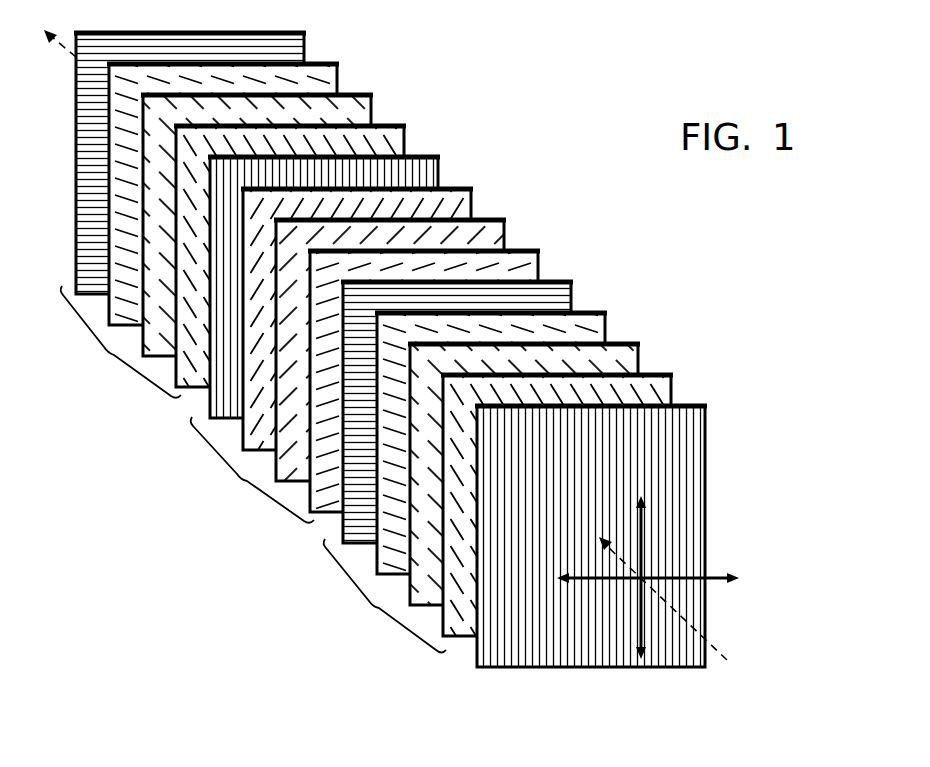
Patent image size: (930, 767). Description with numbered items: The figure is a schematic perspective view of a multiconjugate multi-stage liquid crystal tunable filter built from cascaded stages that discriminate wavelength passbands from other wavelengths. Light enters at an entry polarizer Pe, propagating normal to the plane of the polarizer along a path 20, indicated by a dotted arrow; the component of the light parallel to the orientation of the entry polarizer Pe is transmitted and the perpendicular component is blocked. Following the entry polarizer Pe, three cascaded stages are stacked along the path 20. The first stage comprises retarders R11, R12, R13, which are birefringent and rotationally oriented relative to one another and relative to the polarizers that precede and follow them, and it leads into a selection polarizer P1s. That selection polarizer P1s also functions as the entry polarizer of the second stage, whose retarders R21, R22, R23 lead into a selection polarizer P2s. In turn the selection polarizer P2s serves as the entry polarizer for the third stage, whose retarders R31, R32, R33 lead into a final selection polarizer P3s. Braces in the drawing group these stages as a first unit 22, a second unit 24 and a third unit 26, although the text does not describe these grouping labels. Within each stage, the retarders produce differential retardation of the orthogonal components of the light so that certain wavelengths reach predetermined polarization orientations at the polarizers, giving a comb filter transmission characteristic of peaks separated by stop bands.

The path of the light signal 20 is at (712, 640).
The first retardation unit 22 is at (385, 596).
The second retardation unit 24 is at (252, 470).
The third retardation unit 26 is at (119, 342).
The entry polarizer Pe is at (502, 657).
The retarder R11 is at (673, 378).
The retarder R12 is at (625, 350).
The retarder R13 is at (592, 320).
The selection polarizer P1s is at (553, 282).
The retarder R21 is at (313, 507).
The retarder R22 is at (292, 478).
The retarder R23 is at (243, 448).
The selection polarizer P2s is at (193, 415).
The retarder R31 is at (407, 138).
The retarder R32 is at (357, 112).
The retarder R33 is at (336, 76).
The selection polarizer P3s is at (288, 33).